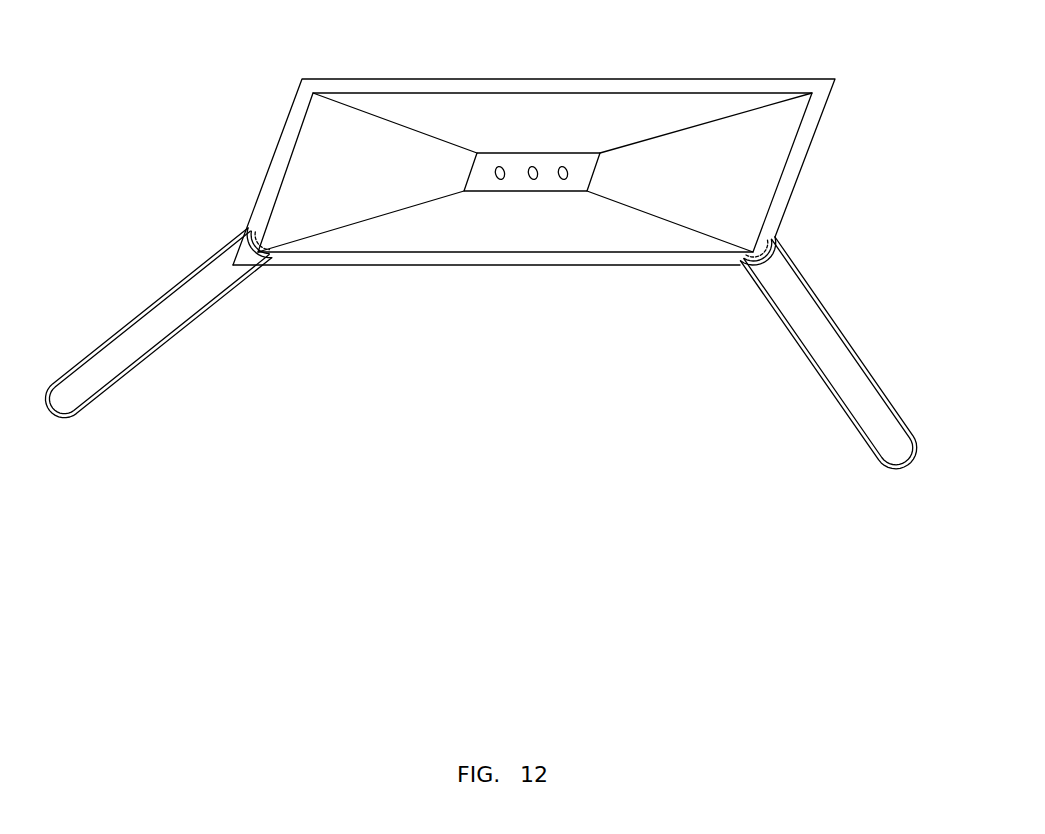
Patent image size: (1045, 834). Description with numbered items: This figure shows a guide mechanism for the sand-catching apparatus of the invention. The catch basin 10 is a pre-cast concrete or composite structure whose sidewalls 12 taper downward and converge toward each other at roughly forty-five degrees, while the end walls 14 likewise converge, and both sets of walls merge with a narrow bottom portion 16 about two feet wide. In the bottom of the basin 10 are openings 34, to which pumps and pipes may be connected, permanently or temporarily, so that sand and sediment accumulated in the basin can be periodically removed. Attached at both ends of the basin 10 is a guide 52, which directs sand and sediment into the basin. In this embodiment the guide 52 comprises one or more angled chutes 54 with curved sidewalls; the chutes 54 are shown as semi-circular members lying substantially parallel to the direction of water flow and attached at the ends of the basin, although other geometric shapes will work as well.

The catch basin 10 is at (848, 123).
The sidewalls 12 is at (568, 79).
The end walls 14 is at (305, 167).
The bottom portion 16 is at (532, 172).
The openings 34 is at (498, 179).
The guide 52 is at (182, 333).
The angled chutes 54 is at (162, 318).